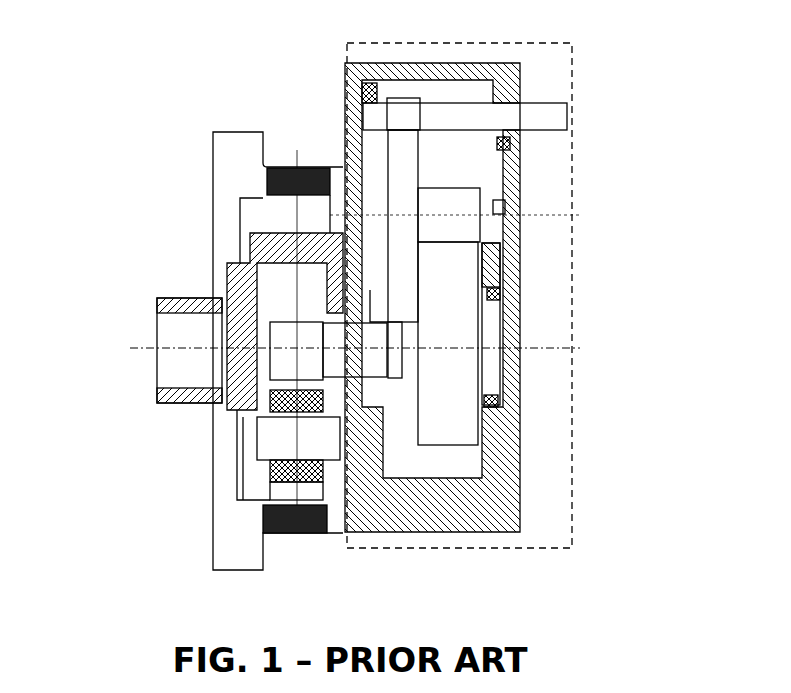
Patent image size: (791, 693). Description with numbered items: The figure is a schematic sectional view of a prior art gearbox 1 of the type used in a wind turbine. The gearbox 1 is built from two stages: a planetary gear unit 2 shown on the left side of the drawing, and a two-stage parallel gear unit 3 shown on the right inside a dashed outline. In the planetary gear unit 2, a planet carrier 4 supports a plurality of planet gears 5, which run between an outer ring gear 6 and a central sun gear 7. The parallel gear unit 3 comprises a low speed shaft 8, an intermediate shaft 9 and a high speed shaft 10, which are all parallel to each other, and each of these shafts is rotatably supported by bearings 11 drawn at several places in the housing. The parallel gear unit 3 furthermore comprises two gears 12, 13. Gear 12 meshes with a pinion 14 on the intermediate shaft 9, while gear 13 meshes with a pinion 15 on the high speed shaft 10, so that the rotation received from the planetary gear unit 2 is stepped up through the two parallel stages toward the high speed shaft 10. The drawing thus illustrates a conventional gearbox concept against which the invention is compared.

The gearbox 1 is at (155, 62).
The planetary gear unit 2 is at (297, 551).
The two-stage parallel gear unit 3 is at (572, 497).
The planet carrier 4 is at (265, 247).
The planet gears 5 is at (277, 490).
The ring gear 6 is at (283, 172).
The sun gear 7 is at (278, 340).
The low speed shaft 8 is at (487, 322).
The intermediate shaft 9 is at (497, 210).
The high speed shaft 10 is at (547, 110).
The bearings 11 is at (365, 95).
The gear 12 is at (468, 270).
The gear 13 is at (400, 165).
The pinion 14 is at (455, 200).
The pinion 15 is at (398, 107).